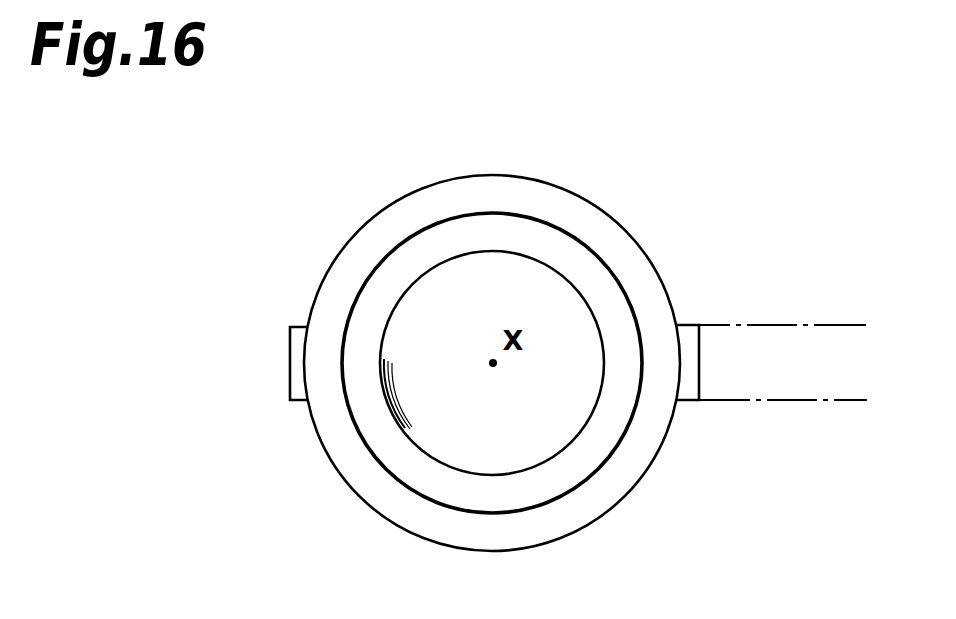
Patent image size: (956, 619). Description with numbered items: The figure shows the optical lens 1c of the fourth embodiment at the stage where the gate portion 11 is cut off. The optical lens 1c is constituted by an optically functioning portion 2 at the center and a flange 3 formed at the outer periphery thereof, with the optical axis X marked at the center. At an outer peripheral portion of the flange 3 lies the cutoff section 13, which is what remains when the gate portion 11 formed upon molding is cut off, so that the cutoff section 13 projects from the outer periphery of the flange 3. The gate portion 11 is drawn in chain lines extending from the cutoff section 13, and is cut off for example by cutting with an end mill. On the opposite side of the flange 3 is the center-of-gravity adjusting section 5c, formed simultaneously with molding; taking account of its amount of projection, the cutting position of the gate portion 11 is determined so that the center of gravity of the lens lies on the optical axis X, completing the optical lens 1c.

The optical lens 1c is at (676, 191).
The optically functioning portion 2 is at (443, 423).
The flange 3 is at (358, 262).
The center-of-gravity adjusting section 5c is at (302, 366).
The gate portion 11 is at (802, 402).
The cutoff section 13 is at (687, 331).